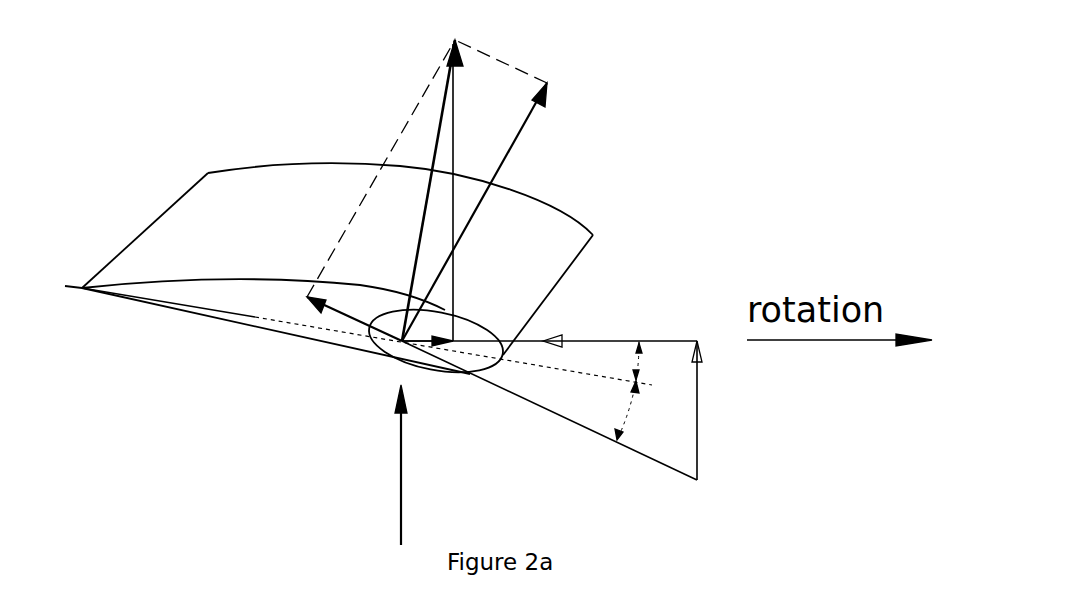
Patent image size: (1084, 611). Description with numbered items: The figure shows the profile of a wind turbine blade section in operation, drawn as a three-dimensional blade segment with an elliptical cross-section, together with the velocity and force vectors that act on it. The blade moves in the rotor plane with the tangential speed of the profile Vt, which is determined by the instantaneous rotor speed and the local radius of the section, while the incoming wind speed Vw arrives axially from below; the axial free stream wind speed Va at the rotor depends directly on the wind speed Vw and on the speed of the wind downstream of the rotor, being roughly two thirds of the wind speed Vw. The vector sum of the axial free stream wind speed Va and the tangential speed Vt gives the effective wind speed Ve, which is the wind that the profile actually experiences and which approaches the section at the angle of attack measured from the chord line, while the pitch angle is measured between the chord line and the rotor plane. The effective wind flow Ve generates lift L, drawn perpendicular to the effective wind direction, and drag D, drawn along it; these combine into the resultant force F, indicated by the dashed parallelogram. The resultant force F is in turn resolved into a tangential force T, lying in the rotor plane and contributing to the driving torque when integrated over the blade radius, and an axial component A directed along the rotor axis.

The resultant aerodynamic force F is at (432, 163).
The lift L is at (531, 112).
The drag D is at (366, 323).
The axial force component A is at (458, 148).
The tangential force T is at (420, 334).
The tangential speed of the profile Vt is at (622, 340).
The axial free stream wind speed Va is at (698, 420).
The effective wind speed Ve is at (557, 410).
The wind speed Vw is at (378, 465).